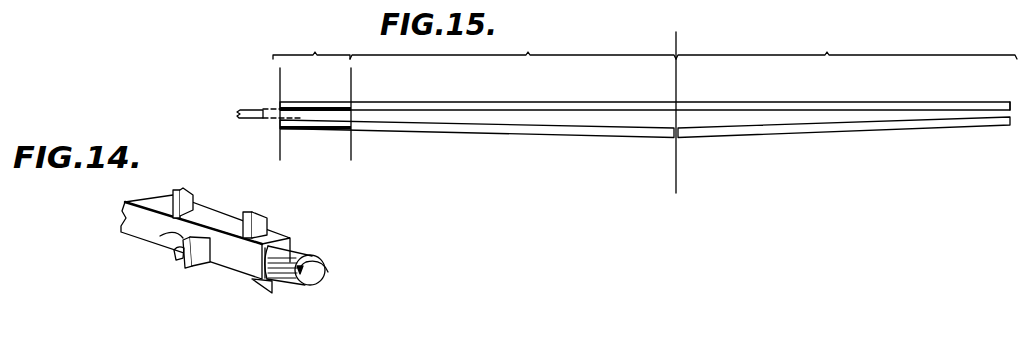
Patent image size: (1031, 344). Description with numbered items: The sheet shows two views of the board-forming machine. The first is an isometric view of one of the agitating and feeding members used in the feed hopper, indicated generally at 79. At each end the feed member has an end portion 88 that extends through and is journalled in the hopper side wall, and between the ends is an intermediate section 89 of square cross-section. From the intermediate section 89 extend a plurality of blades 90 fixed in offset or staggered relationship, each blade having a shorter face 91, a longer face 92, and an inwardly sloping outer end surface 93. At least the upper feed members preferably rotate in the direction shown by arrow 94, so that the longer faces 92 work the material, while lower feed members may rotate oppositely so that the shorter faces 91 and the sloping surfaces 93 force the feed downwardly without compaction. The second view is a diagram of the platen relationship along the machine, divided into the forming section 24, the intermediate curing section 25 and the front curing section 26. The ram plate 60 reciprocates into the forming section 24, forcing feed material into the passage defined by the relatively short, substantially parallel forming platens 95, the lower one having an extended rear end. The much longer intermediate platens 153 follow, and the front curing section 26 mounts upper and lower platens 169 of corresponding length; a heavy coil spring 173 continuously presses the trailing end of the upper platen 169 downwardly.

In FIG. 15, the forming section 24 is at (311, 41).
In FIG. 15, the intermediate curing section 25 is at (513, 43).
In FIG. 15, the front curing section 26 is at (846, 33).
In FIG. 15, the ram plate 60 is at (252, 109).
In FIG. 14, the gate assembly 79 is at (204, 237).
In FIG. 14, the end portion 88 is at (293, 253).
In FIG. 14, the intermediate section 89 is at (212, 223).
In FIG. 14, the blades 90 is at (258, 226).
In FIG. 14, the face 91 is at (183, 236).
In FIG. 14, the face 92 is at (173, 195).
In FIG. 14, the outer end surface 93 is at (177, 250).
In FIG. 14, the arrow 94 is at (327, 274).
In FIG. 15, the platens 95 is at (328, 102).
In FIG. 15, the platens 153 is at (533, 102).
In FIG. 15, the platens 169 is at (861, 101).
In FIG. 15, the coil spring 173 is at (1002, 102).